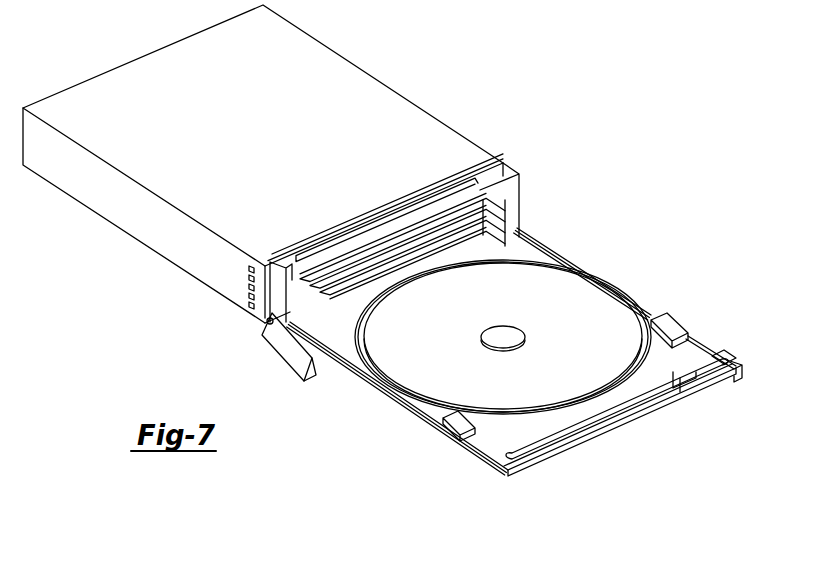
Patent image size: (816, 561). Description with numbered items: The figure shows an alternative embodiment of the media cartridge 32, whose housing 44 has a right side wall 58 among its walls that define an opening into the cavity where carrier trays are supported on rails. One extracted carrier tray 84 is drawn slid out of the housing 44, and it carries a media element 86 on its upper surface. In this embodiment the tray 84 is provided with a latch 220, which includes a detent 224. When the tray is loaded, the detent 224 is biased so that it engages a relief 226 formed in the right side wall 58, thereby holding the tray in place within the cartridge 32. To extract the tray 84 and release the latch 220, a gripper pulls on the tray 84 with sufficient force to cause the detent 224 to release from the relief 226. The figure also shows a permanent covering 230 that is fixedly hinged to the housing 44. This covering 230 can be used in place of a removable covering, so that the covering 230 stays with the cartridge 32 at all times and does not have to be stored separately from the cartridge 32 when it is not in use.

The cartridge 32 is at (395, 46).
The housing 44 is at (433, 130).
The right side wall 58 is at (160, 243).
The extracted carrier tray 84 is at (528, 250).
The media element 86 is at (593, 344).
The latch 220 is at (428, 431).
The detent 224 is at (458, 440).
The relief 226 is at (250, 301).
The permanent covering 230 is at (283, 350).